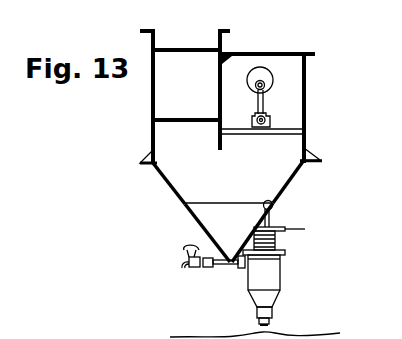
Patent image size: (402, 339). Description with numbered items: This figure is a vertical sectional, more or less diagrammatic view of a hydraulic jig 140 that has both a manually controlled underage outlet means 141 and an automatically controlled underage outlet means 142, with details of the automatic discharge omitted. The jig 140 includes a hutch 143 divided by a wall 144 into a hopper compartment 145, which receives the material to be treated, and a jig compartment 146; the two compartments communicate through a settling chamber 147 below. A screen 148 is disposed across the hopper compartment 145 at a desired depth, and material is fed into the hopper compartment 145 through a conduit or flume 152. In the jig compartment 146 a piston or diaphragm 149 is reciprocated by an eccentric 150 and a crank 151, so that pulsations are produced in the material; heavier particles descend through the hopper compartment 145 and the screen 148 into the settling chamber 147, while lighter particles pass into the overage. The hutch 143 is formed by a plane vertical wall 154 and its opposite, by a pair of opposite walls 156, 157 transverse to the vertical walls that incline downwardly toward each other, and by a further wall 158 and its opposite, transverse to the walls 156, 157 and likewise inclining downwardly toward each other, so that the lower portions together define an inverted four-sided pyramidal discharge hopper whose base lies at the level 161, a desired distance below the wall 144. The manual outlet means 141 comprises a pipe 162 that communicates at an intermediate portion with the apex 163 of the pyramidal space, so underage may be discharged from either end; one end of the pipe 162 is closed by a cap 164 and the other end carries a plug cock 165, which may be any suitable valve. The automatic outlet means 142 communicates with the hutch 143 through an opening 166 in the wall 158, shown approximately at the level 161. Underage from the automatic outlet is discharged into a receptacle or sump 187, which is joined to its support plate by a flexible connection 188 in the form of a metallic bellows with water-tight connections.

The hydraulic jig 140 is at (100, 170).
The manually controlled underage outlet means 141 is at (177, 267).
The automatically controlled underage outlet means 142 is at (283, 272).
The hutch 143 is at (150, 132).
The wall 144 is at (218, 85).
The hopper compartment 145 is at (165, 105).
The jig compartment 146 is at (290, 98).
The settling chamber 147 is at (168, 183).
The screen 148 is at (188, 122).
The piston or diaphragm 149 is at (300, 130).
The eccentric 150 is at (264, 78).
The crank 151 is at (263, 93).
The conduit or flume 152 is at (175, 48).
The plane vertical wall 154 is at (290, 153).
The inclined wall 156 is at (181, 203).
The inclined wall 157 is at (295, 180).
The inclined wall 158 is at (212, 217).
The level 161 is at (222, 202).
The pipe 162 is at (217, 267).
The apex 163 is at (230, 267).
The cap 164 is at (242, 268).
The plug cock 165 is at (195, 270).
The opening 166 is at (280, 205).
The receptacle or sump 187 is at (282, 288).
The flexible connection 188 is at (277, 243).